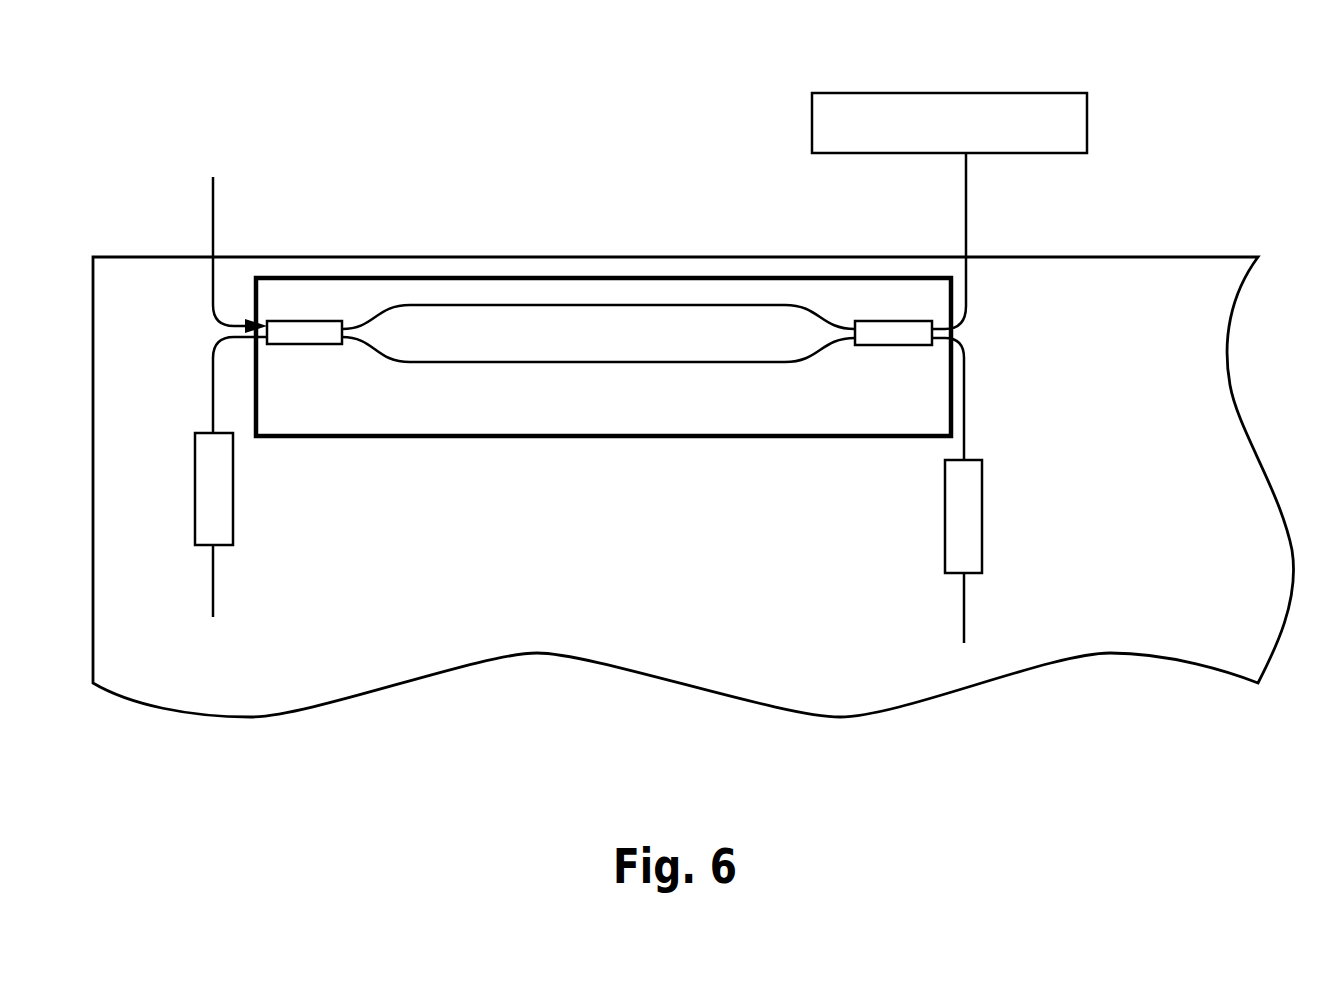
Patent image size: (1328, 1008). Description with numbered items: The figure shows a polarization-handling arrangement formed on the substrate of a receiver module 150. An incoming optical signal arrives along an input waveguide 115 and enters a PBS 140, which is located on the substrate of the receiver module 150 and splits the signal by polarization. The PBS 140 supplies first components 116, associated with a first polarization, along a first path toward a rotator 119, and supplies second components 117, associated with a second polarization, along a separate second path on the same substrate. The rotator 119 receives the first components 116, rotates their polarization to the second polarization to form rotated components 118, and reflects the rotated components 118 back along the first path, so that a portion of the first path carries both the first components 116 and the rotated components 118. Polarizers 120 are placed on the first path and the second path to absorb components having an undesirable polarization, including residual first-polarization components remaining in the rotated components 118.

The input waveguide 115 is at (213, 207).
The first components 116 is at (542, 305).
The second components 117 is at (647, 365).
The rotated components 118 is at (213, 403).
The rotator 119 is at (1075, 104).
The polarizers 120 is at (233, 527).
The PBS 140 is at (417, 277).
The receiver module 150 is at (1212, 224).